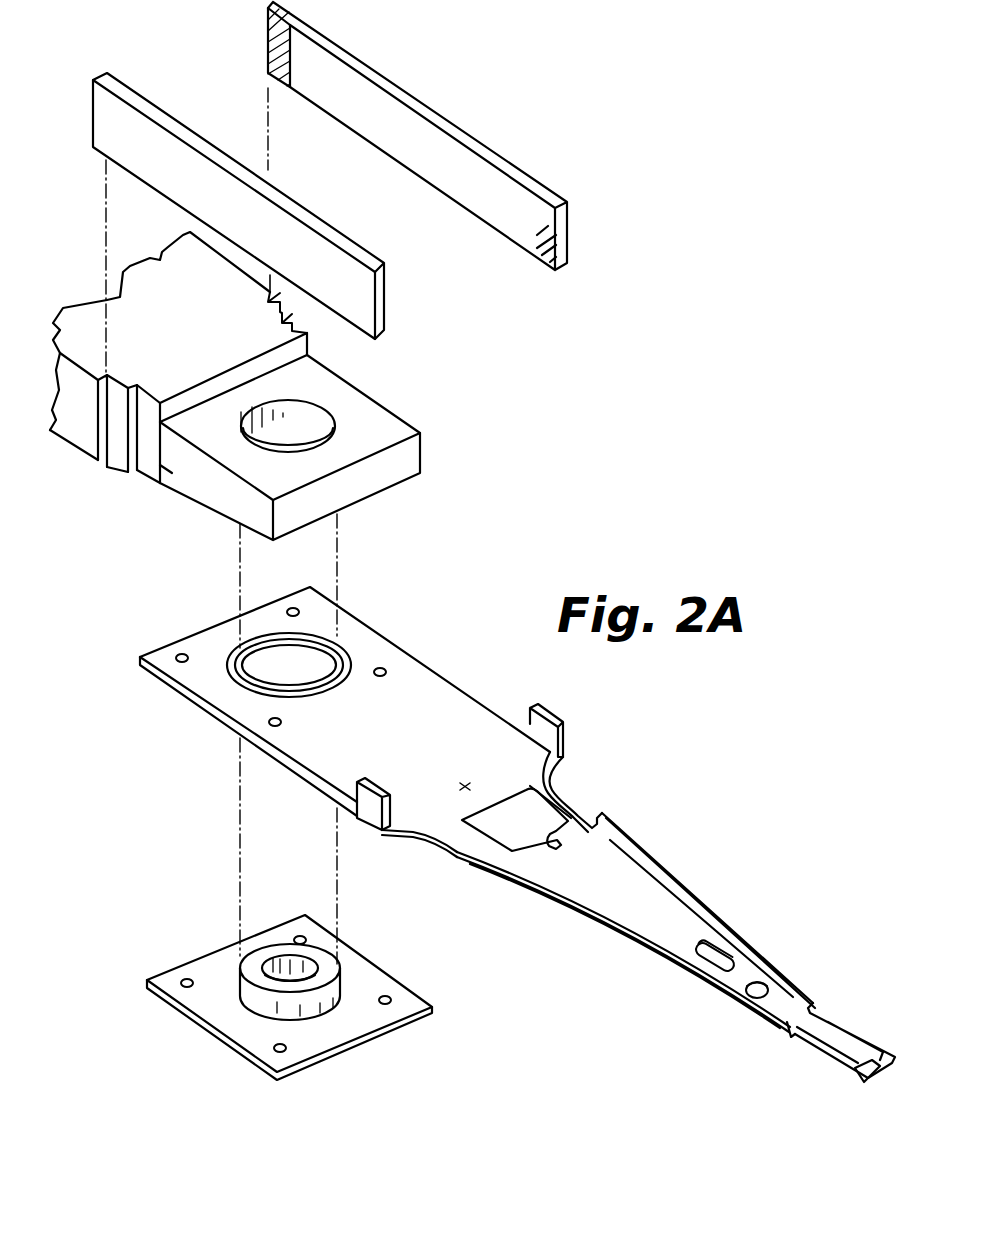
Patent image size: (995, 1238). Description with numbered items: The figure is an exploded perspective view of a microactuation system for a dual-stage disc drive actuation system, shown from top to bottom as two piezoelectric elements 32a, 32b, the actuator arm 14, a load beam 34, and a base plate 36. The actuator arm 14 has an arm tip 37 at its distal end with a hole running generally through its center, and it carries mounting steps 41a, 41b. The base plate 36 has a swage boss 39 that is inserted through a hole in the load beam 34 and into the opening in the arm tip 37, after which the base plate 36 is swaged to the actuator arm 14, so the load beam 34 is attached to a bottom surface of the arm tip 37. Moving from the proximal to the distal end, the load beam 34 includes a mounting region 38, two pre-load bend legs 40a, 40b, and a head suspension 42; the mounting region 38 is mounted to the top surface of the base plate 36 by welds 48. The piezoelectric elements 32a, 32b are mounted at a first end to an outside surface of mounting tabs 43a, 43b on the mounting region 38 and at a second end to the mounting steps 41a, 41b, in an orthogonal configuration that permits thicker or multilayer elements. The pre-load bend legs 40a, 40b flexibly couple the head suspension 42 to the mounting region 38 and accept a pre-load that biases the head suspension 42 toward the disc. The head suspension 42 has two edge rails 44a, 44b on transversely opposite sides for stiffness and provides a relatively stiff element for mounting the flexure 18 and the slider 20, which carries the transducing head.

The actuator arm 14 is at (256, 398).
The flexure 18 is at (847, 1027).
The slider 20 is at (870, 1070).
The piezoelectric element 32a is at (361, 68).
The piezoelectric element 32b is at (93, 103).
The load beam 34 is at (520, 856).
The base plate 36 is at (294, 999).
The arm tip 37 is at (385, 421).
The mounting region 38 is at (197, 673).
The swage boss 39 is at (240, 990).
The pre-load bend leg 40a is at (572, 809).
The pre-load bend leg 40b is at (483, 843).
The mounting step 41a is at (293, 305).
The mounting step 41b is at (120, 448).
The head suspension 42 is at (636, 925).
The mounting tab 43a is at (543, 731).
The mounting tab 43b is at (375, 805).
The edge rail 44a is at (723, 913).
The edge rail 44b is at (603, 930).
The welds 48 is at (293, 610).